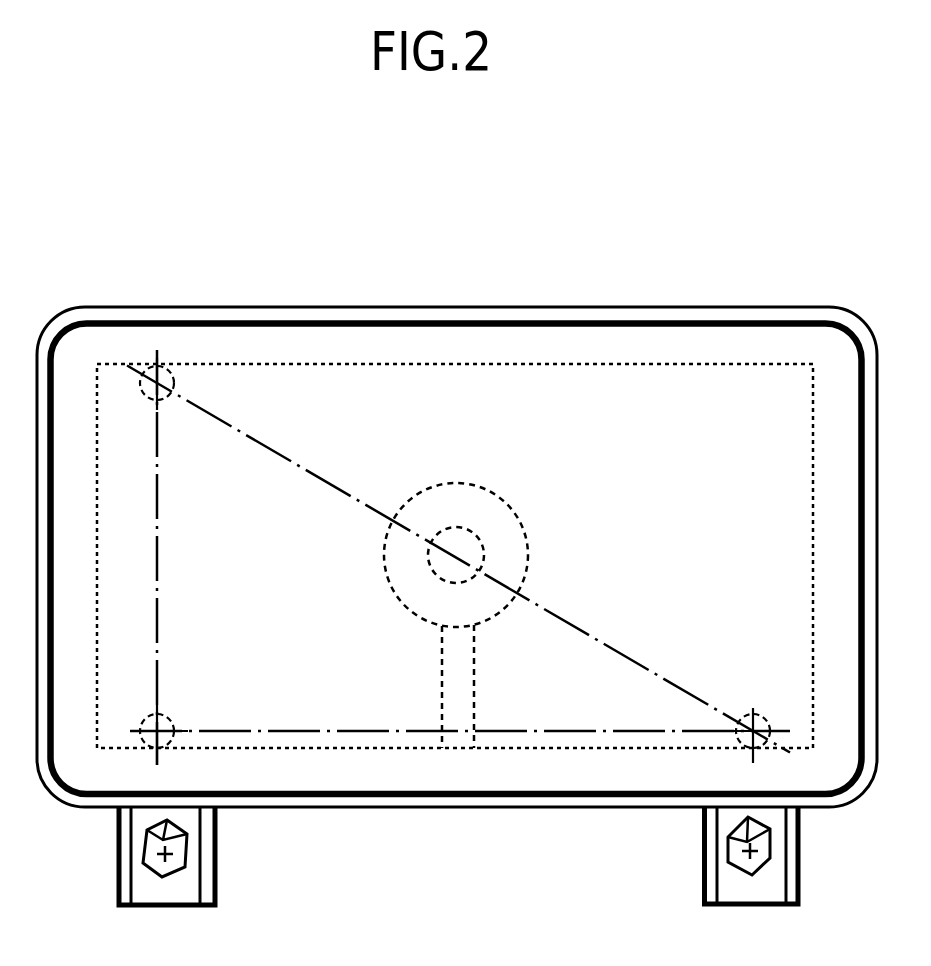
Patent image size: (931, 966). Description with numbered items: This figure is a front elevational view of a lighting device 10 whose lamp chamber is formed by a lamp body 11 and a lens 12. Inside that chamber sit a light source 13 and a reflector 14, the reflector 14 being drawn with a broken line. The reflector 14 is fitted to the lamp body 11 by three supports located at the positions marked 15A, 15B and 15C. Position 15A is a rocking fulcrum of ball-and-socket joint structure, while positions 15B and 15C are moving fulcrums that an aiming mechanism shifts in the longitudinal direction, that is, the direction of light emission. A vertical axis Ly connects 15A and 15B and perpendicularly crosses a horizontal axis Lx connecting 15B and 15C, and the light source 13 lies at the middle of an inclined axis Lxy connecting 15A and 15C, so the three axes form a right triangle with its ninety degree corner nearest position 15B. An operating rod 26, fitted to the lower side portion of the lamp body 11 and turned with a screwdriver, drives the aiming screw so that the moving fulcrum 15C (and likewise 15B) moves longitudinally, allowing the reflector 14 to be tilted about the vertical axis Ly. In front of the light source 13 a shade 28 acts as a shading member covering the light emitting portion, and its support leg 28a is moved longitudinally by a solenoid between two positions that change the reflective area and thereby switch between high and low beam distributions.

The lighting device 10 is at (103, 255).
The lamp body 11 is at (665, 307).
The lens 12 is at (738, 343).
The light source 13 is at (485, 555).
The reflector 14 is at (450, 364).
The rocking fulcrum 15A is at (167, 398).
The moving fulcrum 15B is at (170, 728).
The moving fulcrum 15C is at (757, 712).
The operating rod 26 is at (173, 867).
The shade 28 is at (497, 495).
The support leg 28a is at (476, 685).
The horizontal axis Lx is at (592, 732).
The vertical axis Ly is at (158, 592).
The inclined axis Lxy is at (278, 453).